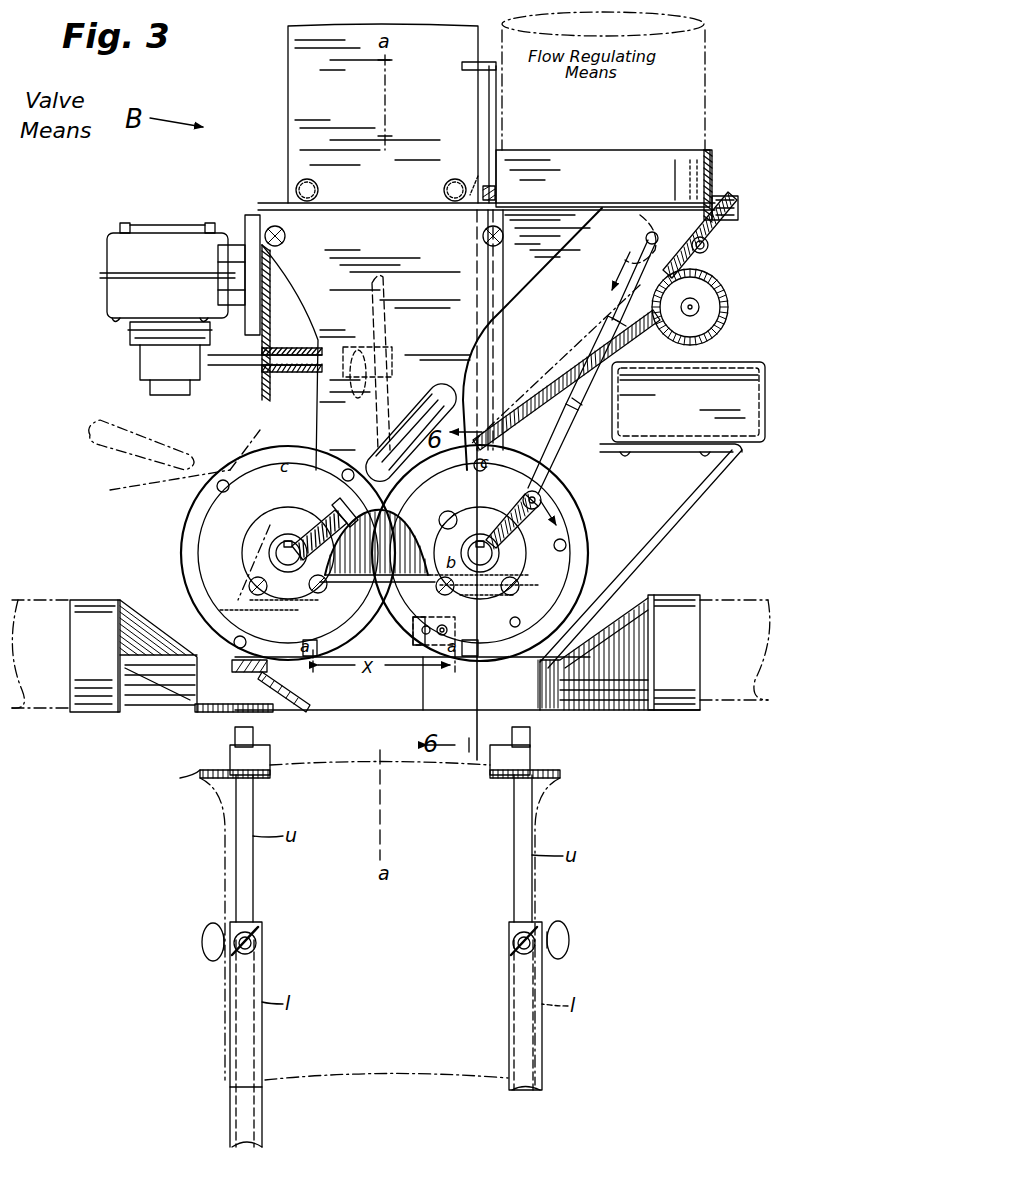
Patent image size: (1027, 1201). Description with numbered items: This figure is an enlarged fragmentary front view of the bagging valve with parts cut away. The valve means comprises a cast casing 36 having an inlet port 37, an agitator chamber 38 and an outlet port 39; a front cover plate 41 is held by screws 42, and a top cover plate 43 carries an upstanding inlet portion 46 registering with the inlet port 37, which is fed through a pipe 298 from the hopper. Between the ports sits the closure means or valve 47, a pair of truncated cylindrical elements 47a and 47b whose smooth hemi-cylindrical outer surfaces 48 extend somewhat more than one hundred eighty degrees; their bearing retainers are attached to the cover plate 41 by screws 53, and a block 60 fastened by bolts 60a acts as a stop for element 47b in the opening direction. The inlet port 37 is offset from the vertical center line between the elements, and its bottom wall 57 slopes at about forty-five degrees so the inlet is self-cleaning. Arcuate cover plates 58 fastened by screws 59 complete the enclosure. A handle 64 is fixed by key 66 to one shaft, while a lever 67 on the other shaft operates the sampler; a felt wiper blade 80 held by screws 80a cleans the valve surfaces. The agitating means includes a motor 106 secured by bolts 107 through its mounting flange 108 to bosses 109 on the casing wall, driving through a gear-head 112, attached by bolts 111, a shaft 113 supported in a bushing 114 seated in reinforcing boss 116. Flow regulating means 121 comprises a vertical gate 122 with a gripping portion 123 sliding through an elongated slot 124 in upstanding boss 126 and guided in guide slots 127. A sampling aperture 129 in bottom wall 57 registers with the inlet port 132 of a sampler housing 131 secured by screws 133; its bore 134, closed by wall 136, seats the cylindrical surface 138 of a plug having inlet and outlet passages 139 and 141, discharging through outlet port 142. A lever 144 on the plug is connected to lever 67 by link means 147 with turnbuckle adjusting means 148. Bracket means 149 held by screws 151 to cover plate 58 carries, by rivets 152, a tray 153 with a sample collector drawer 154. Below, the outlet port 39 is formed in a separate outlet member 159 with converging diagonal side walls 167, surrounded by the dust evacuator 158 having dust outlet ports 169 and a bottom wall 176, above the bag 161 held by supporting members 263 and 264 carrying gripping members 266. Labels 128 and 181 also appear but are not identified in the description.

The casing 36 is at (268, 383).
The inlet port 37 is at (538, 339).
The agitator chamber 38 is at (306, 333).
The outlet port 39 is at (467, 683).
The cover plate 41 is at (503, 270).
The screws 42 is at (285, 236).
The cover plate 43 is at (350, 208).
The upstanding inlet portion 46 is at (656, 163).
The closure means or valve 47 is at (385, 578).
The cylindrical element 47a is at (365, 578).
The cylindrical element 47b is at (395, 540).
The outer non-truncated surface 48 is at (190, 540).
The screws 53 is at (255, 590).
The bottom wall 57 is at (575, 388).
The cover plates 58 is at (240, 470).
The screws 59 is at (200, 545).
The block 60 is at (413, 634).
The bolts 60a is at (448, 628).
The handle 64 is at (413, 412).
The key 66 is at (288, 540).
The lever 67 is at (480, 540).
The wiper blade 80 is at (300, 480).
The screws 80a is at (298, 455).
The motor 106 is at (172, 272).
The bolts 107 is at (240, 232).
The mounting flange 108 is at (247, 225).
The bosses 109 is at (254, 215).
The bolts 111 is at (132, 348).
The gear-head 112 is at (150, 362).
The driven shaft 113 is at (210, 372).
The bushing 114 is at (262, 312).
The reinforcing boss 116 is at (262, 368).
The flow regulating means 121 is at (500, 122).
The vertical gate 122 is at (489, 92).
The handle or gripping portion 123 is at (462, 64).
The elongated slot 124 is at (505, 172).
The upstanding boss 126 is at (496, 193).
The guide slots 127 is at (488, 400).
The pulley 128 is at (720, 268).
The sampling aperture 129 is at (700, 236).
The sampler housing 131 is at (726, 296).
The inlet port 132 is at (708, 250).
The screws 133 is at (725, 232).
The bore 134 is at (728, 308).
The wall 136 is at (690, 316).
The outer cylindrical surface 138 is at (724, 320).
The inlet passage 139 is at (725, 278).
The outlet passage 141 is at (715, 335).
The outlet port 142 is at (700, 345).
The lever 144 is at (650, 228).
The link means 147 is at (570, 418).
The turnbuckle adjusting means 148 is at (607, 345).
The bracket means 149 is at (672, 520).
The screws 151 is at (518, 455).
The rivets 152 is at (625, 455).
The tray 153 is at (758, 446).
The sample collector drawer 154 is at (688, 402).
The dust evacuator means 158 is at (610, 713).
The outlet member 159 is at (352, 712).
The bag 161 is at (540, 790).
The diagonal side walls 167 is at (285, 678).
The dust outlet ports 169 is at (97, 712).
The bottom wall 176 is at (215, 714).
The hopper 181 is at (352, 108).
The supporting member 263 is at (210, 918).
The supporting member 264 is at (550, 915).
The gripping members 266 is at (205, 776).
The pipe 298 is at (708, 62).